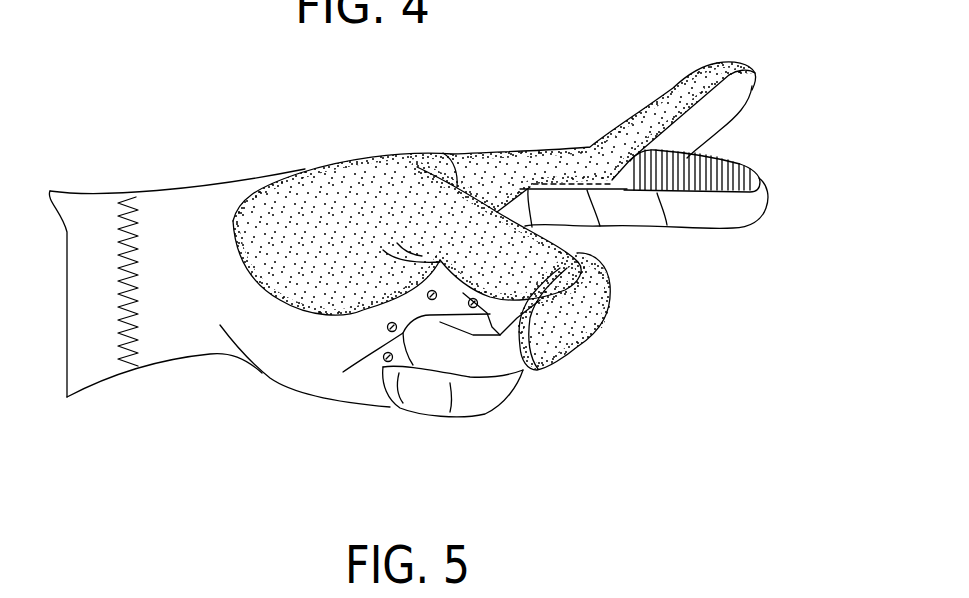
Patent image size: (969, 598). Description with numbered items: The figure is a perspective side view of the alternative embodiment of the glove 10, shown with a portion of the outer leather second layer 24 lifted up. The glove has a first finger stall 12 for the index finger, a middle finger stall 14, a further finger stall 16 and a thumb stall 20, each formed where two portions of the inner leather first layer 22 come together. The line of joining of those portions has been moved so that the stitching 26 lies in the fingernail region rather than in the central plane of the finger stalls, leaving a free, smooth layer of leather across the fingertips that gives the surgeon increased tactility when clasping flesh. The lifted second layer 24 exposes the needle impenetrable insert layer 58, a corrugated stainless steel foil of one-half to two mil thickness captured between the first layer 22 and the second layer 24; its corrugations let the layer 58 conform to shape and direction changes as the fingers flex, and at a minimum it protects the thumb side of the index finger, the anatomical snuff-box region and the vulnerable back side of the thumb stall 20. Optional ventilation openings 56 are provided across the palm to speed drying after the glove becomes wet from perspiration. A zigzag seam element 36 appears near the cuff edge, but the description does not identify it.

The glove 10 is at (221, 152).
The first finger stall 12 is at (760, 214).
The middle finger stall 14 is at (617, 307).
The finger stall 16 is at (527, 372).
The thumb stall 20 is at (593, 251).
The first layer 22 is at (277, 375).
The second layer 24 is at (487, 165).
The stitching 26 is at (732, 70).
The seam 36 is at (124, 198).
The ventilation openings 56 is at (386, 353).
The needle impenetrable insert layer 58 is at (730, 161).